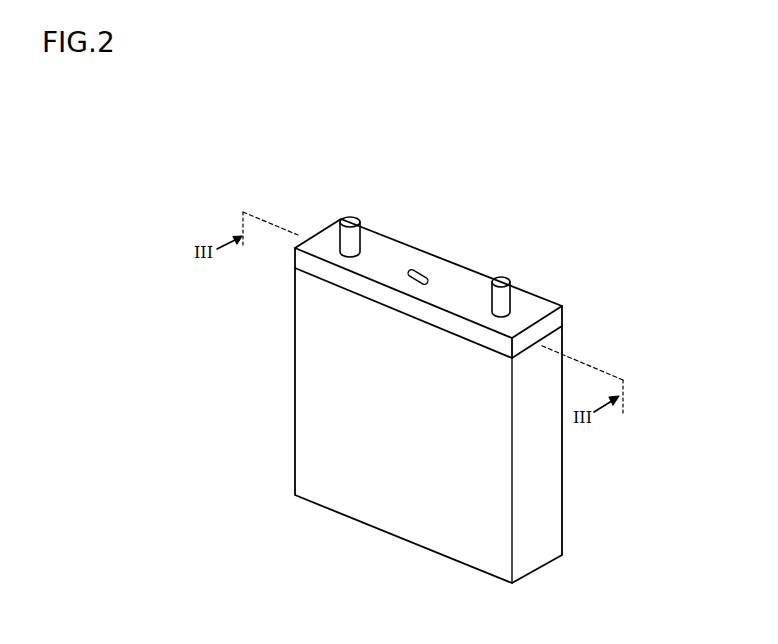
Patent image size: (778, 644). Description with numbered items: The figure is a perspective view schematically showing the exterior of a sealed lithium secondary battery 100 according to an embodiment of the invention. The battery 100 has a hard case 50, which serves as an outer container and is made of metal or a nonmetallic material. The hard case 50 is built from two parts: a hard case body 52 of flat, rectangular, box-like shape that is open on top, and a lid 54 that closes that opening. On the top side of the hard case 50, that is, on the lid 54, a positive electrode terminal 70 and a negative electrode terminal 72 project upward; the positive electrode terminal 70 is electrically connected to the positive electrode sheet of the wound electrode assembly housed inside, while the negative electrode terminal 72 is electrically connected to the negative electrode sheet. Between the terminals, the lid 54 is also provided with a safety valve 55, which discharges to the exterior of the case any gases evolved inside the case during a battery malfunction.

The sealed lithium secondary battery 100 is at (683, 180).
The hard case 50 is at (403, 508).
The hard case body 52 is at (553, 522).
The lid 54 is at (563, 312).
The safety valve 55 is at (413, 269).
The positive electrode terminal 70 is at (352, 217).
The negative electrode terminal 72 is at (498, 277).